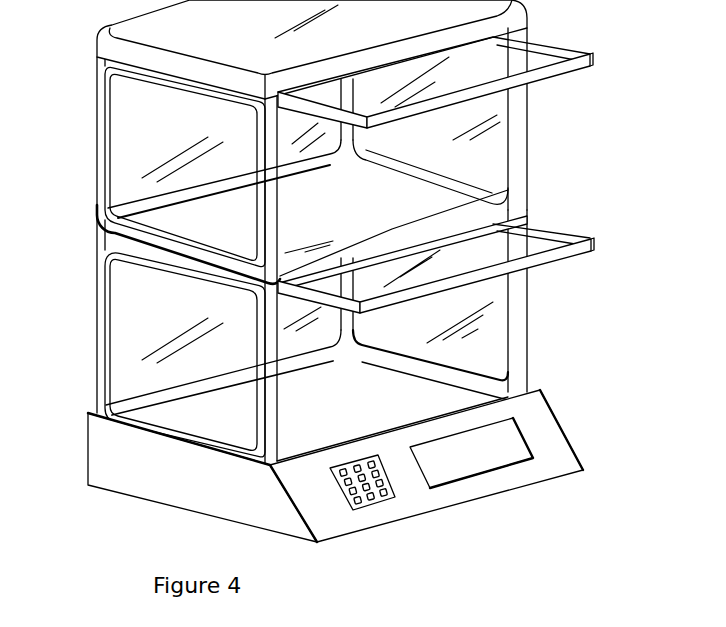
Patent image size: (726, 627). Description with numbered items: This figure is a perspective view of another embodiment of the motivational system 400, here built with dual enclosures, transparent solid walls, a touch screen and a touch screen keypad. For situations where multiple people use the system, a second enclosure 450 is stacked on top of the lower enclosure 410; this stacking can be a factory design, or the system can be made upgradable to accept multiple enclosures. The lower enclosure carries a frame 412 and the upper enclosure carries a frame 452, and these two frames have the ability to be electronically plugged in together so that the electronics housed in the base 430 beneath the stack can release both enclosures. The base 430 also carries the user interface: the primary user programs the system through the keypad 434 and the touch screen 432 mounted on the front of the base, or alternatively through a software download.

The display cabinet 400 is at (344, 279).
The enclosure 410 is at (528, 322).
The frame 412 is at (100, 313).
The base 430 is at (112, 470).
The touch screen 432 is at (462, 472).
The keypad 434 is at (368, 503).
The enclosure 450 is at (528, 141).
The frame 452 is at (103, 151).